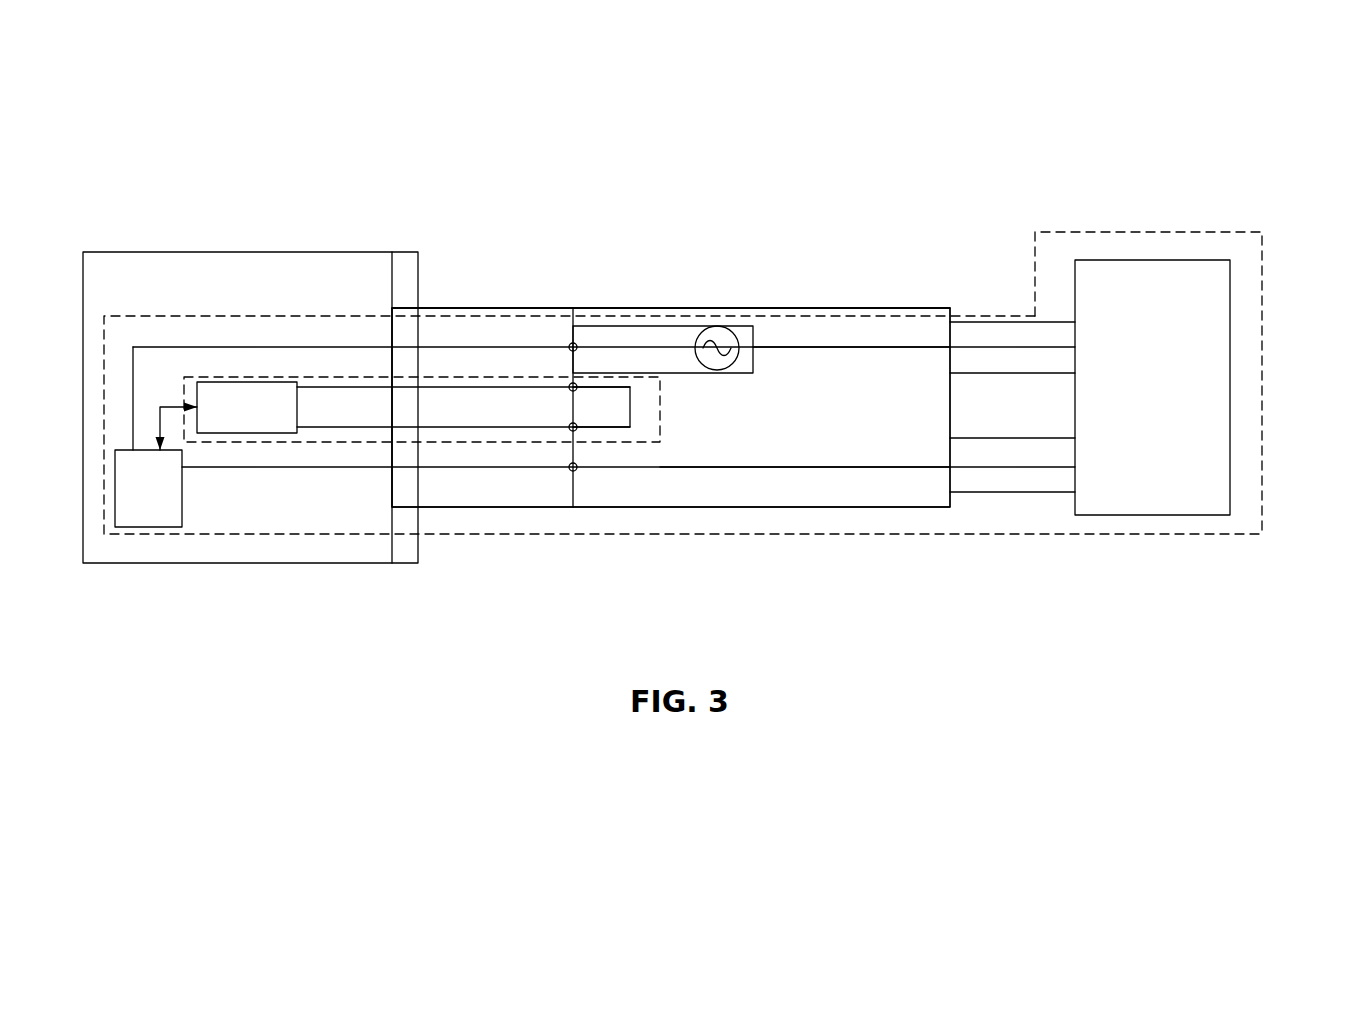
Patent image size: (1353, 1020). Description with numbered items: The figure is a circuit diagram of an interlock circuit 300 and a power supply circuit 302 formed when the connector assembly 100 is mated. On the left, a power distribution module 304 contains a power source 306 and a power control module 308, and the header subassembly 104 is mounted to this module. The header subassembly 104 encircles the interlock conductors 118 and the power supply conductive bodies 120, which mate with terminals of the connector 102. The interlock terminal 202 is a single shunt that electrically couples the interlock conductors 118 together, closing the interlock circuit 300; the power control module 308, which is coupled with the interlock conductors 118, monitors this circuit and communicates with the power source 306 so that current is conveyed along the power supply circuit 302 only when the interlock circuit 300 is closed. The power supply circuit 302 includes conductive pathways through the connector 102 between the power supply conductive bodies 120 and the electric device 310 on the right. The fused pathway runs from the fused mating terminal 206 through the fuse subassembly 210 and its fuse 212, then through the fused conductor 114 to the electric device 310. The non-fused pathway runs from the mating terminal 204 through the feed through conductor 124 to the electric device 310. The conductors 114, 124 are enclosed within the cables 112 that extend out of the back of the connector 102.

The connector assembly 100 is at (955, 122).
The connector 102 is at (680, 307).
The header subassembly 104 is at (477, 307).
The cables 112 is at (1040, 373).
The fused conductor 114 is at (914, 350).
The interlock conductors 118 is at (468, 387).
The power supply conductive bodies 120 is at (500, 345).
The feed through conductor 124 is at (917, 465).
The interlock terminal 202 is at (601, 432).
The mating terminal 204 is at (585, 470).
The fused mating terminal 206 is at (595, 340).
The fuse subassembly 210 is at (756, 360).
The fuse 212 is at (698, 372).
The interlock circuit 300 is at (227, 377).
The power supply circuit 302 is at (347, 315).
The power distribution module 304 is at (330, 563).
The power source 306 is at (174, 503).
The power control module 308 is at (273, 420).
The electric device 310 is at (1233, 473).